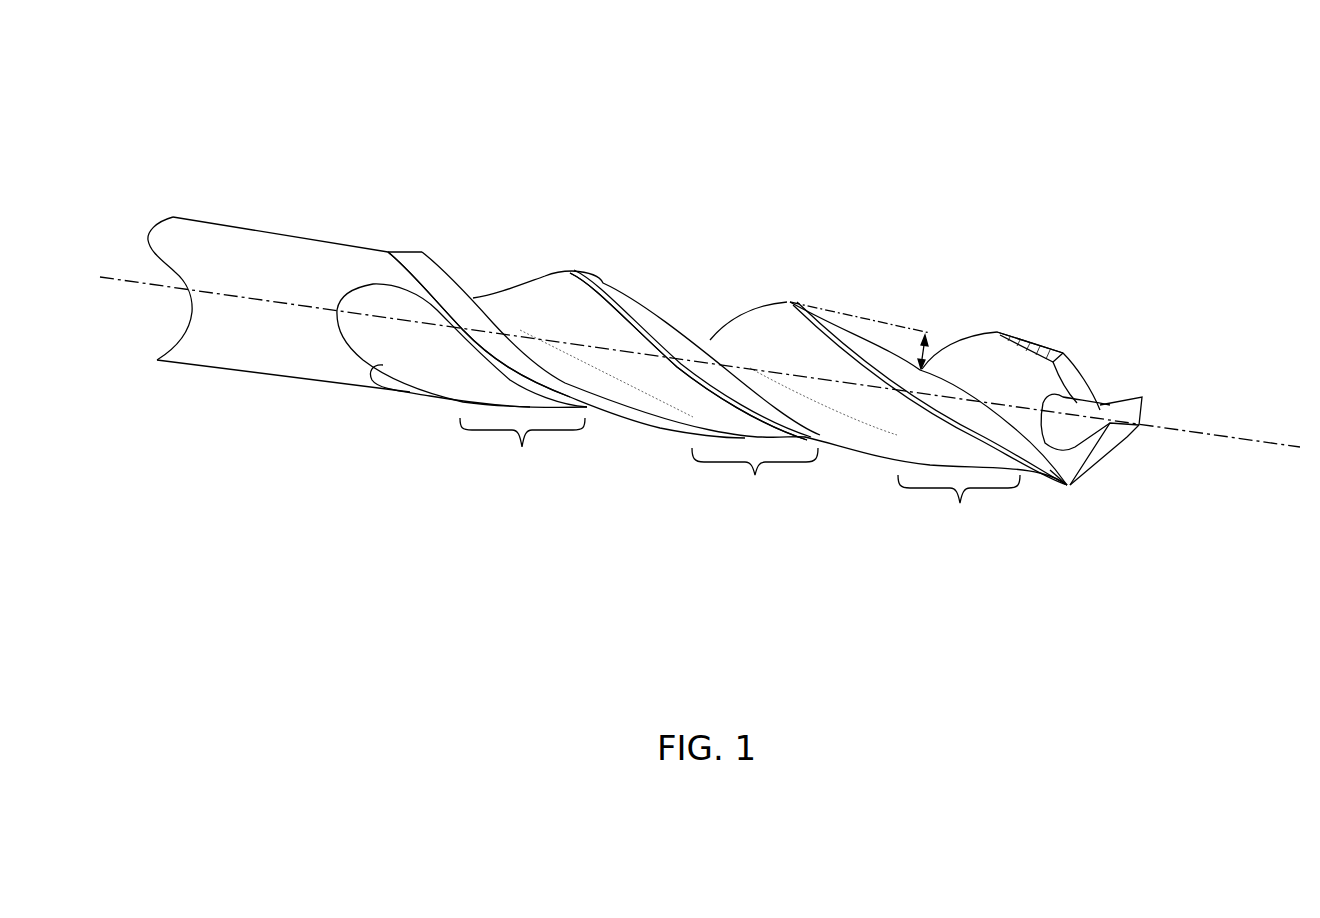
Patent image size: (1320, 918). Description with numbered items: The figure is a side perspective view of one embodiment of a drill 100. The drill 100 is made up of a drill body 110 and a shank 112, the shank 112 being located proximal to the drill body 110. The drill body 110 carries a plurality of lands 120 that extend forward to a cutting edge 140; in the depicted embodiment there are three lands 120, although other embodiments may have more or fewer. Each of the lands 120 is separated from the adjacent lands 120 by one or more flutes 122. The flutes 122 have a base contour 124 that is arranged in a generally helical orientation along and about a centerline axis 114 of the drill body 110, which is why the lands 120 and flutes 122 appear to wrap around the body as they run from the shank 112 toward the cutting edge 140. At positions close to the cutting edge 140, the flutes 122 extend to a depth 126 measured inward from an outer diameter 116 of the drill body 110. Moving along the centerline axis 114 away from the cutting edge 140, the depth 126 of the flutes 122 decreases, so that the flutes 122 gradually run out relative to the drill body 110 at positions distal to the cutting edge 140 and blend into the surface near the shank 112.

The drill 100 is at (203, 122).
The drill body 110 is at (1083, 312).
The shank 112 is at (222, 390).
The centerline axis 114 is at (248, 298).
The outer diameter 116 is at (790, 302).
The lands 120 is at (627, 287).
The flutes 122 is at (740, 473).
The base contour 124 is at (509, 307).
The depth 126 is at (899, 328).
The cutting edge 140 is at (1065, 500).